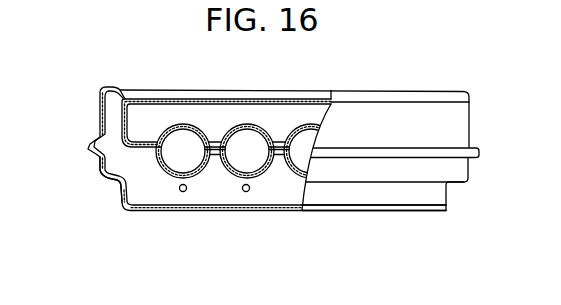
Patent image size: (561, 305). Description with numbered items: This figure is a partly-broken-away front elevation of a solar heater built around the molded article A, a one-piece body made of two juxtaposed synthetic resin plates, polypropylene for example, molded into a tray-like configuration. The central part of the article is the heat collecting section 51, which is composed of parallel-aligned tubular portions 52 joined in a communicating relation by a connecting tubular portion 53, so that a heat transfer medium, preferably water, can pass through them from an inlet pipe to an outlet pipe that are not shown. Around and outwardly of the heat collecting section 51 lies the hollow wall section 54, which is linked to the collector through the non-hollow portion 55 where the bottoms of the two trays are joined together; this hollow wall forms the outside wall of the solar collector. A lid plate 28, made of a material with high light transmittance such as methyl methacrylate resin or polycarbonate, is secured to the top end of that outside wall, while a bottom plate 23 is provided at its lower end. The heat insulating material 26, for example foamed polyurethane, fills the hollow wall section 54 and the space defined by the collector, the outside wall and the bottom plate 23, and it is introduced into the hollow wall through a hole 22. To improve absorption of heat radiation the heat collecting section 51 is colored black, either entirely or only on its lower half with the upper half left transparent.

The molded article A is at (100, 124).
The non-hollow portion 55 is at (143, 178).
The lid plate 28 is at (168, 91).
The connecting tubular portion 53 is at (213, 143).
The tubular portion 52 is at (252, 123).
The heat collecting section 51 is at (273, 126).
The heat insulating material 26 is at (106, 165).
The hollow wall section 54 is at (125, 185).
The hole 22 is at (184, 192).
The bottom plate 23 is at (397, 212).